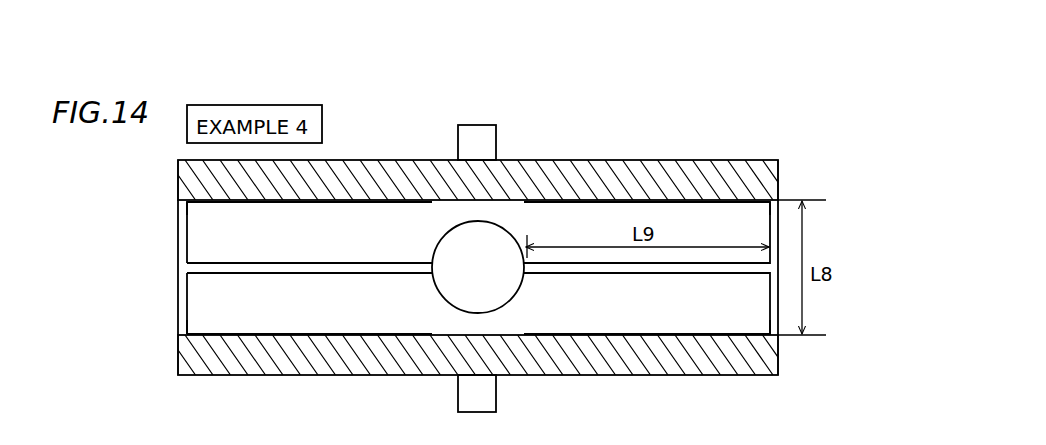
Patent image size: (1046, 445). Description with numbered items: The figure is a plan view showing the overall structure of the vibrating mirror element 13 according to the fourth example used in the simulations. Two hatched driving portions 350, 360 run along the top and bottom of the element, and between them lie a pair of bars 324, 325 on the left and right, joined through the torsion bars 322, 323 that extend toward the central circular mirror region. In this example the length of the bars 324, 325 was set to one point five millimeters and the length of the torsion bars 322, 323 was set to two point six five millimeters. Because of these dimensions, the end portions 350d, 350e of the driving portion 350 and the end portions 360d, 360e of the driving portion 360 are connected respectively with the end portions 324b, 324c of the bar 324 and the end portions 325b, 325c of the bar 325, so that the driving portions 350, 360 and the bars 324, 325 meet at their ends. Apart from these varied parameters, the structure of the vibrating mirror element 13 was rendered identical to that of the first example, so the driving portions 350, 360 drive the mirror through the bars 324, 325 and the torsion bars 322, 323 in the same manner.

The vibrating mirror element 13 is at (812, 120).
The driving portion 350 is at (799, 178).
The end portion 350d is at (177, 178).
The end portion 350e is at (779, 178).
The driving portion 360 is at (799, 361).
The end portion 360d is at (177, 364).
The end portion 360e is at (779, 362).
The torsion bar 322 is at (350, 275).
The torsion bar 323 is at (591, 275).
The bar 324 is at (182, 243).
The end portion 324b is at (186, 203).
The end portion 324c is at (186, 334).
The bar 325 is at (769, 292).
The end portion 325b is at (769, 203).
The end portion 325c is at (769, 334).